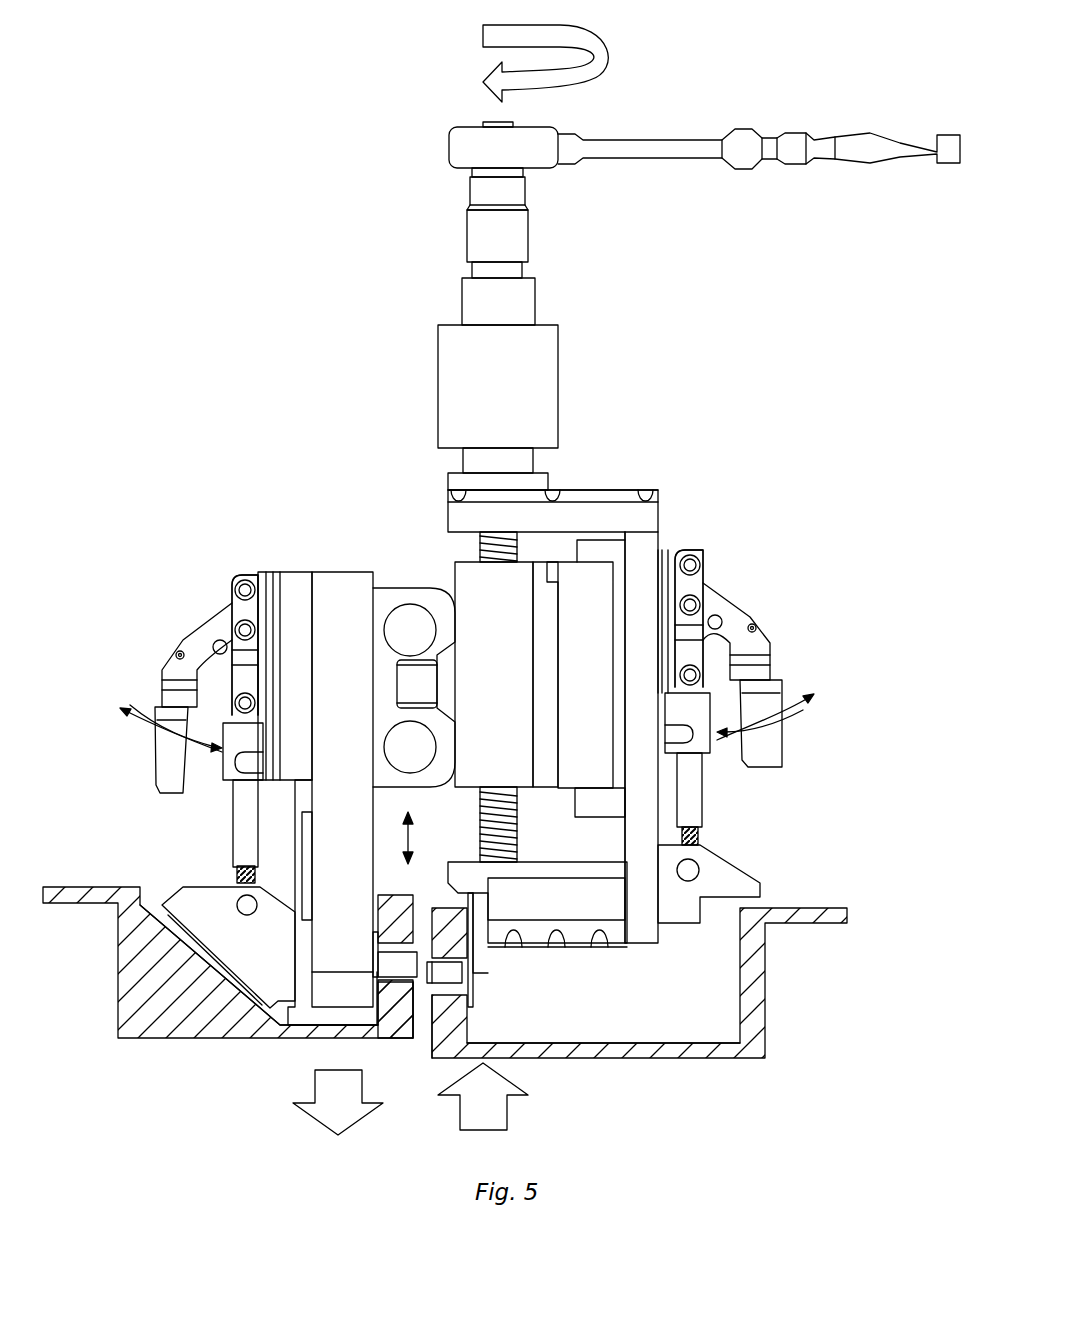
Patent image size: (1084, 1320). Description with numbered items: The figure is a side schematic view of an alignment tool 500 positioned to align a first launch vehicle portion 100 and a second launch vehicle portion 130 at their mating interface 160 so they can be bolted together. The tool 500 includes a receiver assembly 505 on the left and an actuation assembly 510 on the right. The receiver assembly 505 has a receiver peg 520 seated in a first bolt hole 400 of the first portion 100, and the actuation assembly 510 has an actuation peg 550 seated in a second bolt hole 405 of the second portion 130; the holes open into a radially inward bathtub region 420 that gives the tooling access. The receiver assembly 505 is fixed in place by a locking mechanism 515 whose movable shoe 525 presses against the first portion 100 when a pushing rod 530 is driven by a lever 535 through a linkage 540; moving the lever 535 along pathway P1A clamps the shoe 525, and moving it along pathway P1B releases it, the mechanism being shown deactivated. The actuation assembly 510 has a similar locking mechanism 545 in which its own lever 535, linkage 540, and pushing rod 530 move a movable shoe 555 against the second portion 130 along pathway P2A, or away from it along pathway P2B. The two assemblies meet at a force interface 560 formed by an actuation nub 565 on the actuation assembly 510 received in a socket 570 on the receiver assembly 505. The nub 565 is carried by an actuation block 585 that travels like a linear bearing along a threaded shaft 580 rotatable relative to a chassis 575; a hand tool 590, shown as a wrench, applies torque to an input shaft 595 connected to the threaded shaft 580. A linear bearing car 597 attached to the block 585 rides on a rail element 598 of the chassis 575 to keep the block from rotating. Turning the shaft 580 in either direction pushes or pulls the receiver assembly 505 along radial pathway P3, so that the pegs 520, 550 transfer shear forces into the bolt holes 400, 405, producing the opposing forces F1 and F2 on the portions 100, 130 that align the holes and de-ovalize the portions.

The hand tool 590 is at (670, 147).
The input shaft 595 is at (525, 268).
The actuation block 585 is at (482, 580).
The linear bearing car 597 is at (563, 572).
The rail element 598 is at (592, 553).
The actuation assembly 510 is at (638, 478).
The chassis 575 is at (638, 565).
The alignment tool 500 is at (332, 467).
The receiver assembly 505 is at (257, 557).
The locking mechanism 515 is at (224, 590).
The linkage 540 is at (260, 613).
The lever 535 is at (175, 690).
The force interface 560 is at (410, 572).
The actuation nub 565 is at (415, 680).
The socket 570 is at (392, 690).
The locking mechanism 545 is at (771, 602).
The pushing rod 530 is at (240, 825).
The movable shoe 525 is at (228, 895).
The threaded shaft 580 is at (500, 837).
The movable shoe 555 is at (720, 877).
The receiver peg 520 is at (400, 962).
The actuation peg 550 is at (458, 978).
The second bolt hole 405 is at (468, 990).
The first bolt hole 400 is at (412, 985).
The bathtub region 420 is at (270, 1025).
The first launch vehicle portion 100 is at (158, 1020).
The second launch vehicle portion 130 is at (668, 1060).
The mating interface 160 is at (424, 1077).
The pathway P1A is at (122, 718).
The pathway P1B is at (145, 745).
The pathway P2A is at (805, 712).
The pathway P2B is at (780, 730).
The radial pathway P3 is at (400, 840).
The force F1 is at (298, 1112).
The force F2 is at (510, 1108).